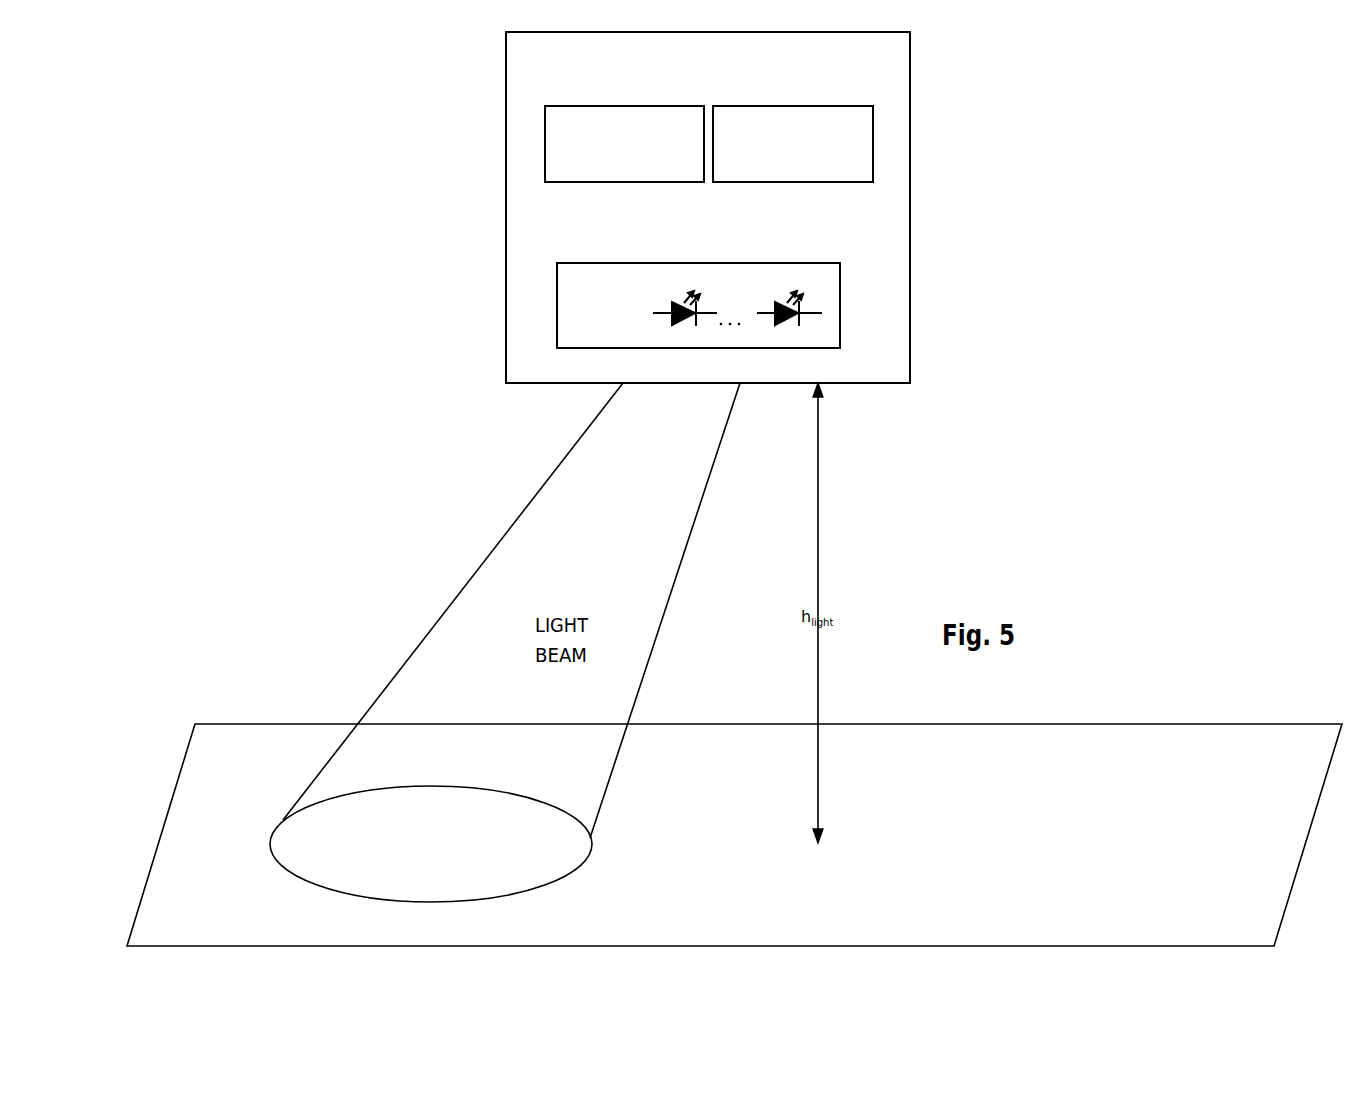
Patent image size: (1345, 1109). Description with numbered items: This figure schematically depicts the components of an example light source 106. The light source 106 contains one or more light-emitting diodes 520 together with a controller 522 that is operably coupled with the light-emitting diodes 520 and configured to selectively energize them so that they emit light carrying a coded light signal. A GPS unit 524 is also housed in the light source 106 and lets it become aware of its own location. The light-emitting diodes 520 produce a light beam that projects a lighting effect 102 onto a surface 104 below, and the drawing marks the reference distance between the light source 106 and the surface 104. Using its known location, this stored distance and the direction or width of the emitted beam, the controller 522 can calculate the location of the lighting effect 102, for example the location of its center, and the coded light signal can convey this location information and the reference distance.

The light source 106 is at (708, 207).
The controller 522 is at (624, 144).
The GPS unit 524 is at (793, 144).
The light-emitting diodes 520 is at (698, 305).
The lighting effect 102 is at (431, 844).
The surface 104 is at (734, 835).